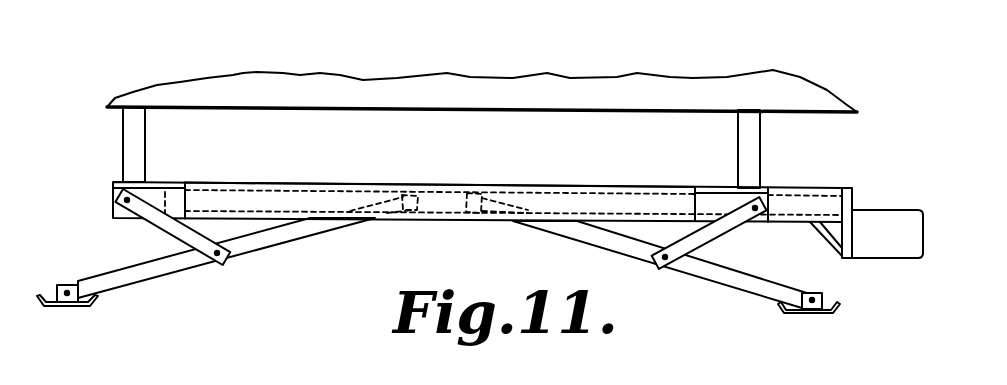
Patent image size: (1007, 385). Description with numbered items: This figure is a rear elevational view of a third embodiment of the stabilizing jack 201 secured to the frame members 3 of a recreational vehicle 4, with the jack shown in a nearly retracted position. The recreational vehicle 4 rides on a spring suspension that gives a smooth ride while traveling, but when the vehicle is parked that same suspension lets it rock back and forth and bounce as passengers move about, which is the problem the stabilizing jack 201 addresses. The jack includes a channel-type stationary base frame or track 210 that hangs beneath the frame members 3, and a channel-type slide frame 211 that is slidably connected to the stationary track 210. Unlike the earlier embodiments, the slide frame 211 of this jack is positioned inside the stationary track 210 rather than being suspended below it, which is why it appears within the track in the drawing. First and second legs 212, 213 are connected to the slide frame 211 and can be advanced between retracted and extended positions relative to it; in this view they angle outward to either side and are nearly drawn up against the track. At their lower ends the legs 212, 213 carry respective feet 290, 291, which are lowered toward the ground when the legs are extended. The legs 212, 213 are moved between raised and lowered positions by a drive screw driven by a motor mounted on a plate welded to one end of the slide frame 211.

The stabilizing jack 201 is at (66, 103).
The recreational vehicle 4 is at (813, 88).
The frame members 3 is at (147, 139).
The stationary track 210 is at (598, 185).
The slide frame 211 is at (218, 187).
The first leg 212 is at (119, 268).
The second leg 213 is at (743, 273).
The foot 290 is at (62, 308).
The foot 291 is at (806, 312).